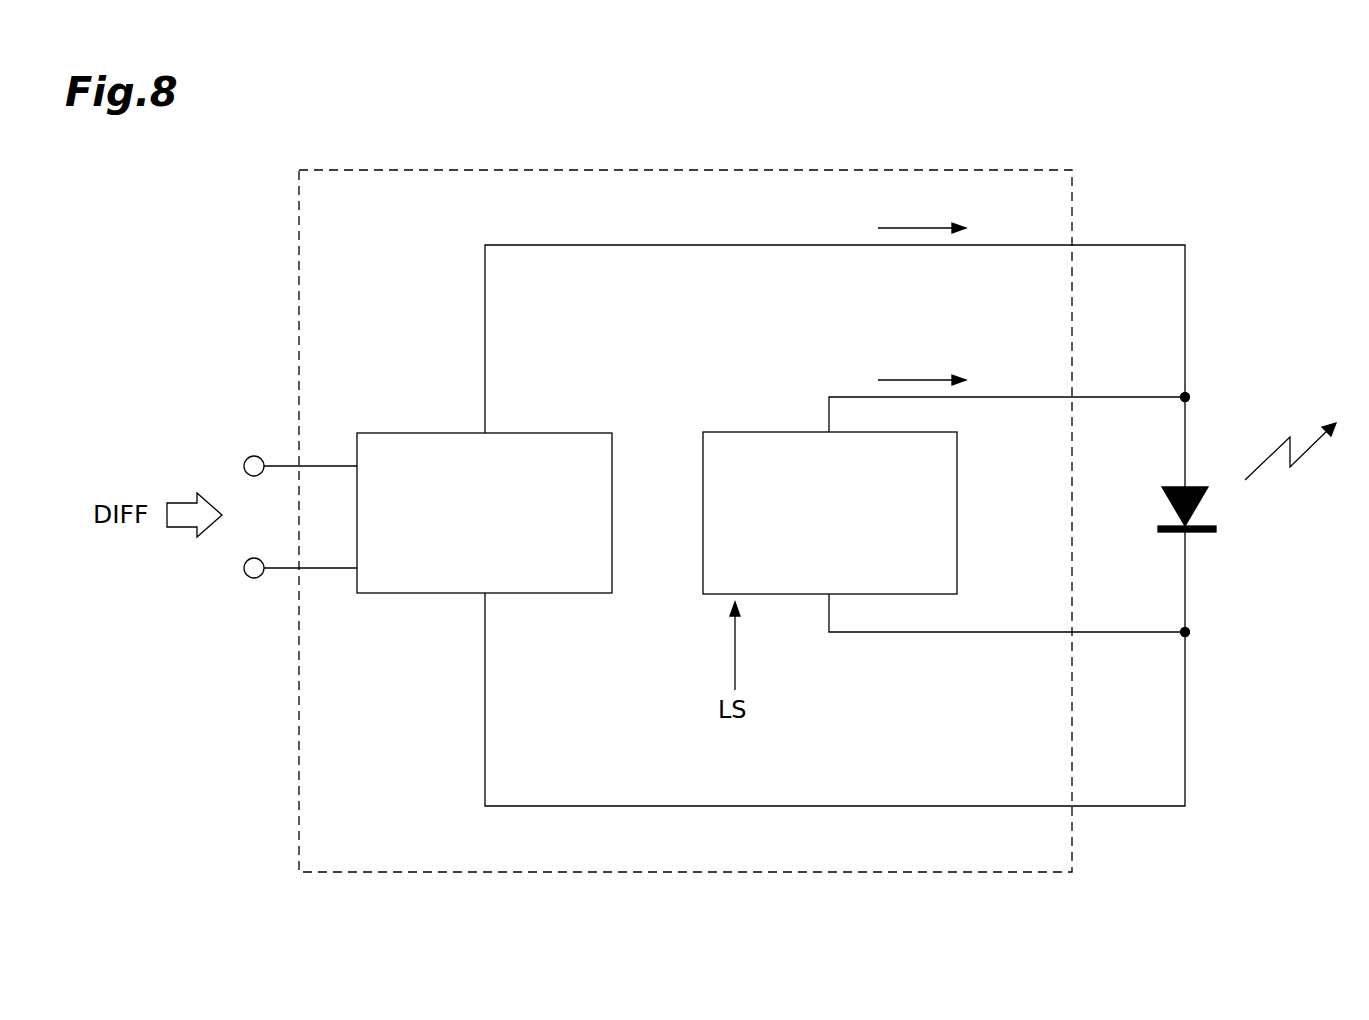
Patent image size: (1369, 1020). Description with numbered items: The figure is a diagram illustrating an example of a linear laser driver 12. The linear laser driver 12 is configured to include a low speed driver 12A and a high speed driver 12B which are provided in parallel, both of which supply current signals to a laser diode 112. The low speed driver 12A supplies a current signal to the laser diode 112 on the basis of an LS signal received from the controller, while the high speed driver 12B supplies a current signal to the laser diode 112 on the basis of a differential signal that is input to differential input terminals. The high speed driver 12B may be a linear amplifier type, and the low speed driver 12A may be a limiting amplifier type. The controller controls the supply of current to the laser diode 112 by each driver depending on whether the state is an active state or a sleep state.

The linear laser driver 12 is at (918, 168).
The low speed driver 12A is at (758, 432).
The high speed driver 12B is at (578, 432).
The laser diode 112 is at (1200, 485).